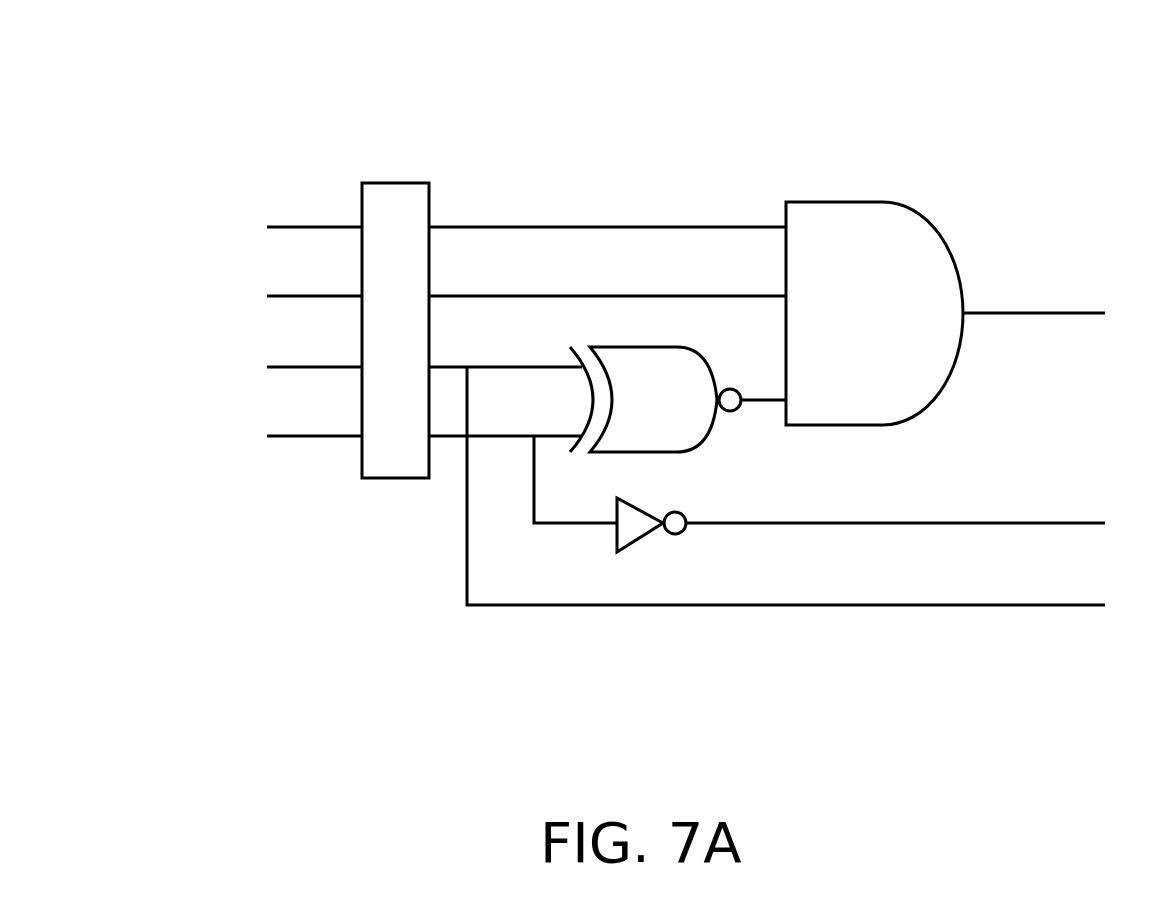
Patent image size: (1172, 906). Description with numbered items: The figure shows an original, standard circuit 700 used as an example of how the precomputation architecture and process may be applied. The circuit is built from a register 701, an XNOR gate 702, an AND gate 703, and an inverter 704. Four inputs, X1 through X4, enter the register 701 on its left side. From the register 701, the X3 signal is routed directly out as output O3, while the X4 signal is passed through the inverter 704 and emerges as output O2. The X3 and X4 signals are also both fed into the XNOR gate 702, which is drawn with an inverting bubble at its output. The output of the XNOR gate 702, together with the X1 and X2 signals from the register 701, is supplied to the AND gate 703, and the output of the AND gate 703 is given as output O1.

The logic circuit 700 is at (86, 61).
The register 701 is at (400, 183).
The XNOR gate 702 is at (677, 347).
The AND gate 703 is at (898, 202).
The inverter 704 is at (640, 508).